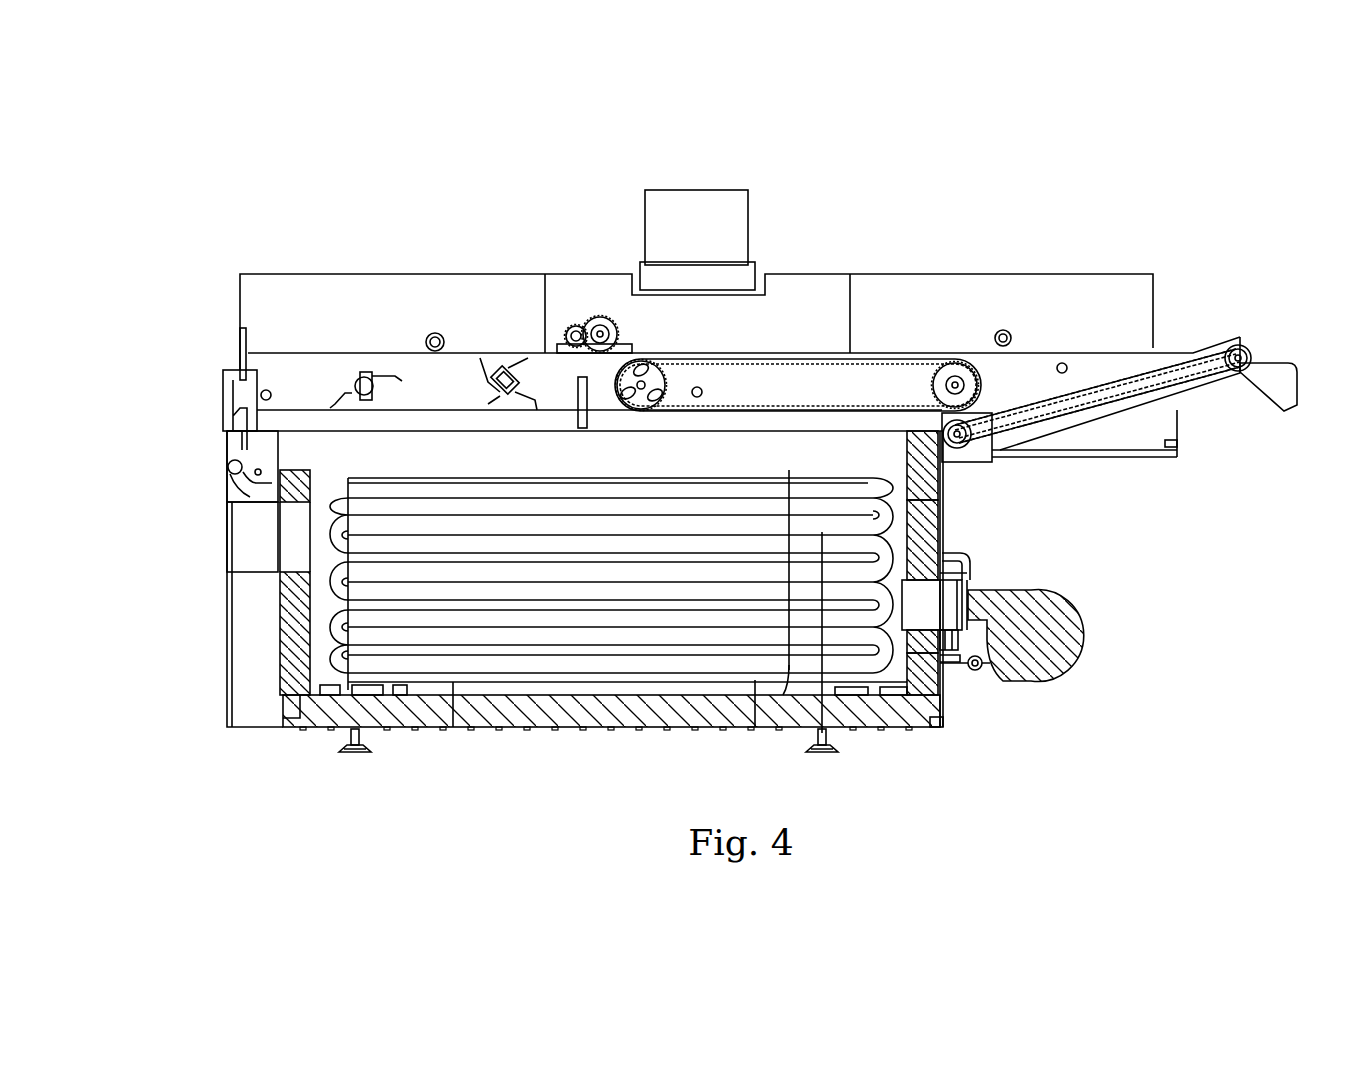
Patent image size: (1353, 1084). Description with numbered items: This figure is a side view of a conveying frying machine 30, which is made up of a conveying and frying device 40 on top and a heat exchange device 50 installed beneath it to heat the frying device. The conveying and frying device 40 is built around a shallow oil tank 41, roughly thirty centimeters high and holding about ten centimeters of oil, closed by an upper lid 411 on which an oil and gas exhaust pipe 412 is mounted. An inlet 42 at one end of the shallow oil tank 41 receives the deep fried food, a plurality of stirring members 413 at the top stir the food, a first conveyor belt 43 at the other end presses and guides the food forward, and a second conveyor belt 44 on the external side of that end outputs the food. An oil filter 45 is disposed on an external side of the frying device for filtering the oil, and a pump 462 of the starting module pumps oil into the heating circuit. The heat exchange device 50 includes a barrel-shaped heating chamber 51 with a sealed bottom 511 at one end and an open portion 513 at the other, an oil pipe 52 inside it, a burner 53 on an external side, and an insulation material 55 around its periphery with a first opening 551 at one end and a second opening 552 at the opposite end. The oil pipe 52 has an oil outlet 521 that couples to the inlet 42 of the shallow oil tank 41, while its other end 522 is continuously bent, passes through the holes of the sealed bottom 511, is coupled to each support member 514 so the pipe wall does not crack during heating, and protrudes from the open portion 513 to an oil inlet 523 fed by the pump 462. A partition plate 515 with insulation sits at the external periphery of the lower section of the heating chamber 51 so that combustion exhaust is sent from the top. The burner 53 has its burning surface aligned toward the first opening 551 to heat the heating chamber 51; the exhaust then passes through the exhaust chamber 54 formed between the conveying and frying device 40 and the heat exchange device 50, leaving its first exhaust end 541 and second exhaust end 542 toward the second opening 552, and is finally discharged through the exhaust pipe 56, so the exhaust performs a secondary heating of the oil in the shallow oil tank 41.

The conveying frying machine 30 is at (850, 182).
The conveying and frying device 40 is at (1218, 320).
The shallow oil tank 41 is at (295, 365).
The upper lid 411 is at (1002, 270).
The oil and gas exhaust pipe 412 is at (723, 229).
The stirring member 413 is at (377, 355).
The inlet 42 is at (232, 323).
The first conveyor belt 43 is at (866, 345).
The second conveyor belt 44 is at (1124, 355).
The oil filter 45 is at (977, 450).
The pump 462 is at (985, 668).
The heat exchange device 50 is at (984, 543).
The heating chamber 51 is at (695, 682).
The sealed bottom 511 is at (333, 482).
The open portion 513 is at (823, 470).
The support member 514 is at (785, 678).
The partition plate 515 is at (347, 607).
The oil pipe 52 is at (665, 633).
The oil outlet 521 is at (268, 488).
The other end of the oil pipe 522 is at (927, 700).
The oil inlet 523 is at (957, 665).
The burner 53 is at (1062, 645).
The exhaust chamber 54 is at (683, 452).
The first exhaust end 541 is at (790, 450).
The second exhaust end 542 is at (323, 450).
The insulation material 55 is at (941, 716).
The first opening 551 is at (928, 592).
The second opening 552 is at (290, 545).
The exhaust pipe 56 is at (240, 540).